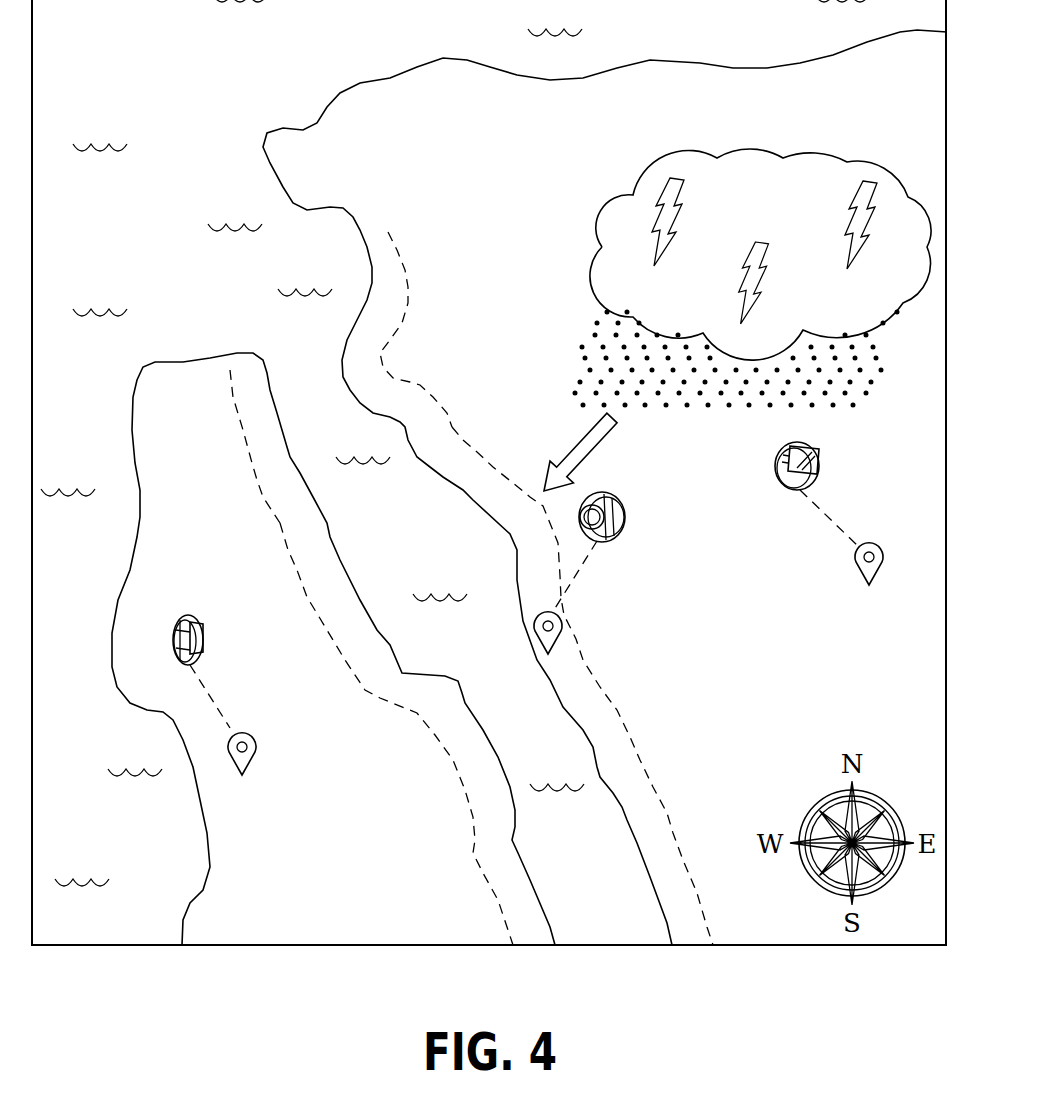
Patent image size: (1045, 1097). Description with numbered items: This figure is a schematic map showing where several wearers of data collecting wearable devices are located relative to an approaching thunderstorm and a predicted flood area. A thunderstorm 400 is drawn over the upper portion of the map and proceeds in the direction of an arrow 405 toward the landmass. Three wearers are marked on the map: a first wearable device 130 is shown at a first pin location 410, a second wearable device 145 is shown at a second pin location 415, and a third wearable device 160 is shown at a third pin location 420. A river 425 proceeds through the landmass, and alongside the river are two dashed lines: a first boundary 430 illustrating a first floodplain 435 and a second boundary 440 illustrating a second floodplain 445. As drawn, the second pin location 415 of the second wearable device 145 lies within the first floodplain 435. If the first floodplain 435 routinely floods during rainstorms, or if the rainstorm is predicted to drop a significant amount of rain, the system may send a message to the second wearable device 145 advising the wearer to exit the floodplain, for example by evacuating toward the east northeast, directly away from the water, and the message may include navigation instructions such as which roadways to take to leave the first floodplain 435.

The first wearable device 130 is at (818, 455).
The second wearable device 145 is at (620, 535).
The third wearable device 160 is at (205, 630).
The thunderstorm 400 is at (578, 218).
The arrow 405 is at (592, 455).
The first pin location 410 is at (857, 557).
The second pin location 415 is at (565, 634).
The third pin location 420 is at (258, 750).
The river 425 is at (431, 549).
The first boundary 430 is at (448, 422).
The first floodplain 435 is at (418, 405).
The second boundary 440 is at (290, 553).
The second floodplain 445 is at (282, 481).